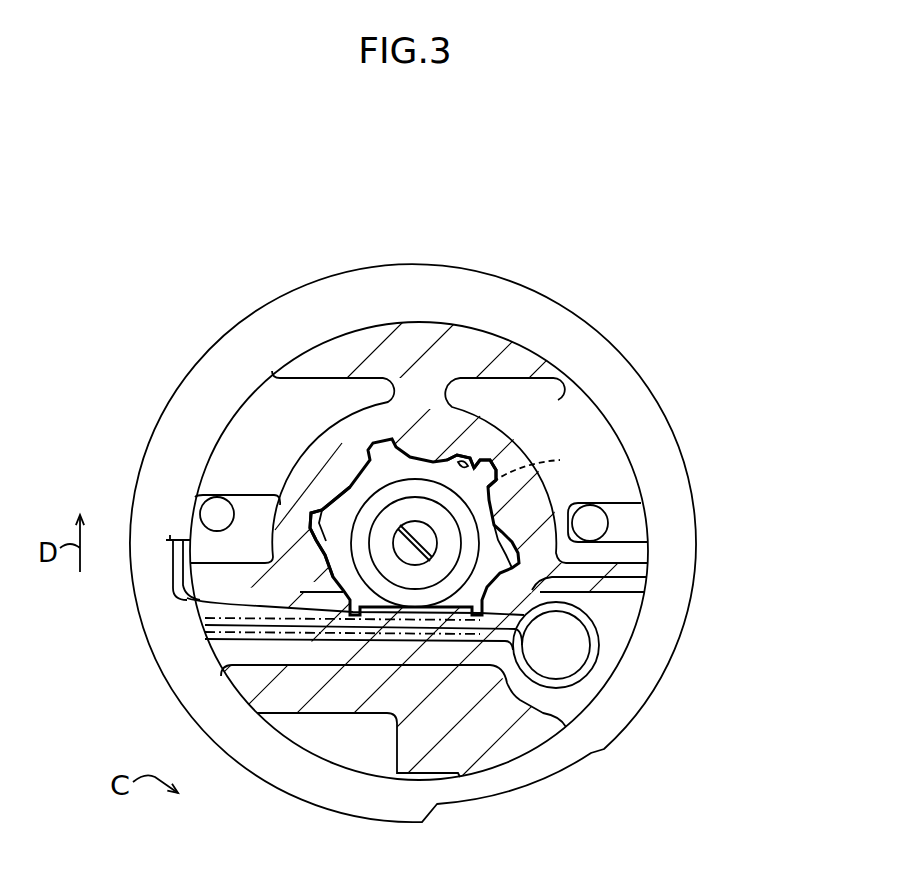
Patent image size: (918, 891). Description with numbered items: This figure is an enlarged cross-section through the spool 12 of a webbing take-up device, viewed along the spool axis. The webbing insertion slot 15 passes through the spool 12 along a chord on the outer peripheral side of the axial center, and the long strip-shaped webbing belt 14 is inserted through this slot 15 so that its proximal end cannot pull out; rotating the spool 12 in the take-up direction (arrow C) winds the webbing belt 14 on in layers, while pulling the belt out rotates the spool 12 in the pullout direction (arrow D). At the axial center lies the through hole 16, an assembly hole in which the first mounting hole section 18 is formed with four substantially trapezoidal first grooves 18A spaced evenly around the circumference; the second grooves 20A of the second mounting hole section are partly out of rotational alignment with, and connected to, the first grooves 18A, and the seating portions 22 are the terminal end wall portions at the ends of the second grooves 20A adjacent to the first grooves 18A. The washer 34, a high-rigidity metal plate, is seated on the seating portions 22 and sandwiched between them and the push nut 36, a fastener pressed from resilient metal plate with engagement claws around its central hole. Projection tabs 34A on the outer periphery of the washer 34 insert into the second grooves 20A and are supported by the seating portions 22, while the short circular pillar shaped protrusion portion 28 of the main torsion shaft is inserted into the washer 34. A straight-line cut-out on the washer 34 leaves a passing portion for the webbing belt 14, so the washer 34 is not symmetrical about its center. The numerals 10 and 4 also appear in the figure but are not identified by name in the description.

The rotary actuator 10 is at (557, 193).
The spool 12 is at (447, 258).
The stator core 4 is at (398, 410).
The webbing belt 14 is at (370, 642).
The webbing insertion slot 15 is at (235, 652).
The through hole 16 is at (500, 520).
The first mounting hole section 18 is at (477, 452).
The first grooves 18A is at (450, 458).
The second grooves 20A is at (482, 462).
The seating portions 22 is at (543, 463).
The protrusion portion 28 is at (393, 553).
The washer 34 is at (350, 481).
The projection tabs 34A is at (470, 328).
The push nut 36 is at (350, 510).